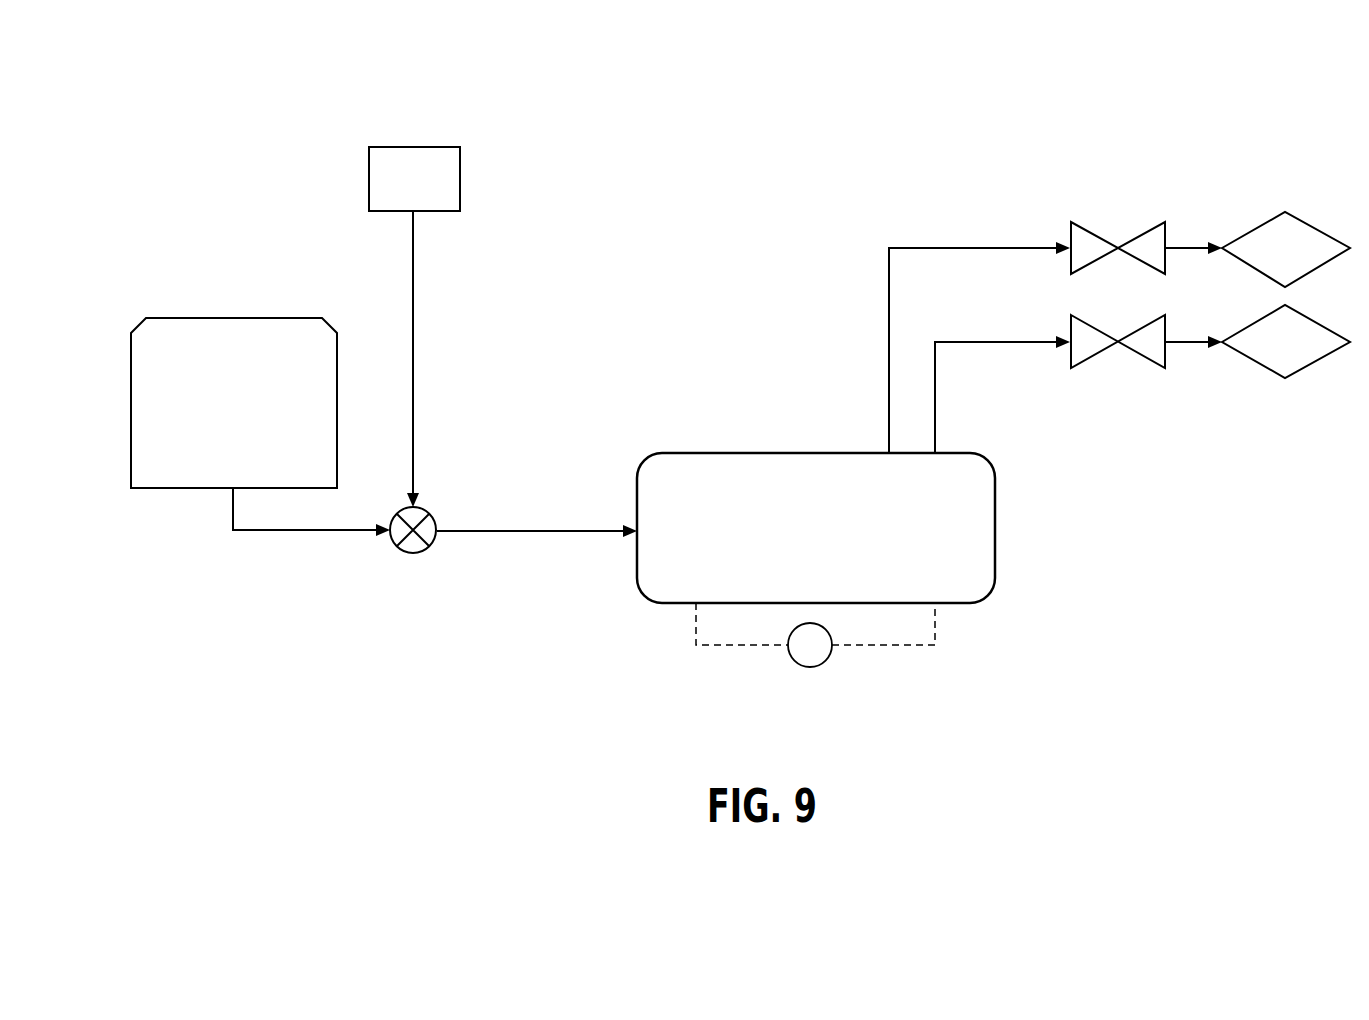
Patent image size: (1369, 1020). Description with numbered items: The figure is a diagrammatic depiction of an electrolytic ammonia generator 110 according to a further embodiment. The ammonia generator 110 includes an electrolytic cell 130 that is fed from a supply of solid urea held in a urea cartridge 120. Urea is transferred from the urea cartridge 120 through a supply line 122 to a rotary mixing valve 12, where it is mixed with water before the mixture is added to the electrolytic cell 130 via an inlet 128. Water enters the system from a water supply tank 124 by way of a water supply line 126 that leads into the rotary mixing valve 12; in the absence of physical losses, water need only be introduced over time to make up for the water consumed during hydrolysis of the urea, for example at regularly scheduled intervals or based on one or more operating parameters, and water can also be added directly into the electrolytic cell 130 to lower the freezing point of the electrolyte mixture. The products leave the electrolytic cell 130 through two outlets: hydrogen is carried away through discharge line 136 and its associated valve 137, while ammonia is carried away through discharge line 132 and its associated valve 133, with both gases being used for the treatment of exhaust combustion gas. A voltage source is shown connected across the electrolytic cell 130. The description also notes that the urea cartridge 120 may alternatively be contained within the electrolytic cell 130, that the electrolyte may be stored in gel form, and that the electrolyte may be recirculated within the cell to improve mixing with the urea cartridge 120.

The ammonia generator 110 is at (116, 116).
The urea cartridge 120 is at (245, 318).
The supply line 122 is at (300, 532).
The rotary mixing valve 12 is at (410, 505).
The water supply tank 124 is at (461, 180).
The water supply line 126 is at (415, 385).
The inlet 128 is at (558, 530).
The electrolytic cell 130 is at (779, 453).
The discharge line 136 is at (962, 248).
The valve 137 is at (1172, 210).
The discharge line 132 is at (991, 342).
The valve 133 is at (1172, 303).